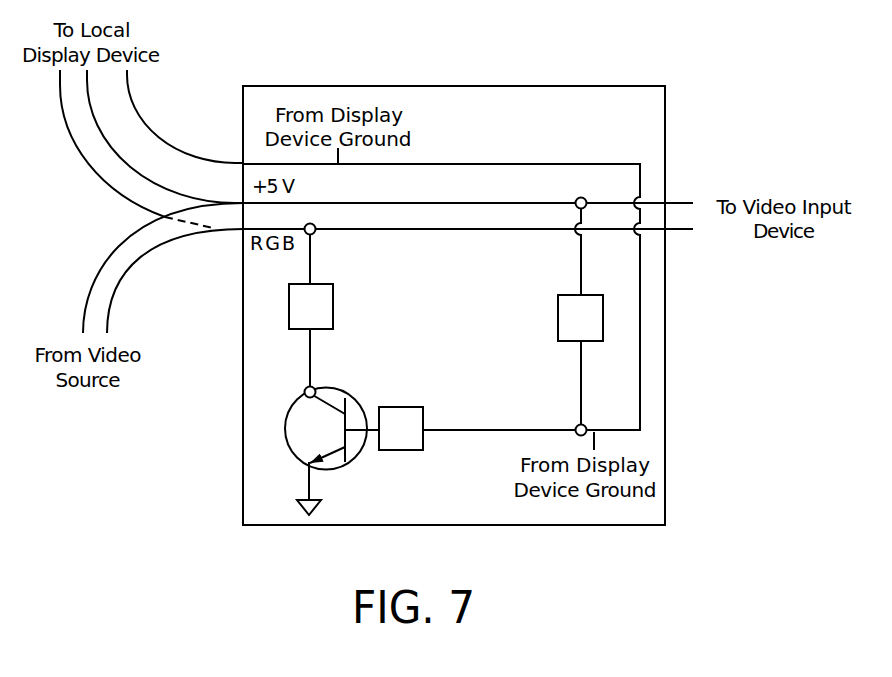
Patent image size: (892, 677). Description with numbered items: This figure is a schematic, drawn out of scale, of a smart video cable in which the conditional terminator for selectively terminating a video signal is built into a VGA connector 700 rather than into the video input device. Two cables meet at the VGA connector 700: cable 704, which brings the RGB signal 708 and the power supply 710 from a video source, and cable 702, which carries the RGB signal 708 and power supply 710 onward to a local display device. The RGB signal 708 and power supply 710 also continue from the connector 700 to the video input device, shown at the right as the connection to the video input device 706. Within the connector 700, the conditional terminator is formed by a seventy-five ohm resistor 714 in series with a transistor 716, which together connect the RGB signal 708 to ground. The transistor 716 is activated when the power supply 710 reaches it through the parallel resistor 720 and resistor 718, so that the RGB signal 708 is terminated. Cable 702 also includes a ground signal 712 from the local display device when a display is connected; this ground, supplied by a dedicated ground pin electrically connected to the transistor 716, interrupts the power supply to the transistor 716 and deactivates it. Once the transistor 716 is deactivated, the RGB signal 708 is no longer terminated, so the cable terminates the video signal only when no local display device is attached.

The VGA connector 700 is at (527, 98).
The cable 702 is at (71, 142).
The cable 704 is at (84, 278).
The connection to video input device 706 is at (680, 199).
The RGB signal 708 is at (100, 176).
The power supply 710 is at (126, 161).
The ground signal 712 is at (150, 128).
The 75-Ohm resistor 714 is at (332, 300).
The transistor 716 is at (337, 397).
The resistor 718 is at (415, 442).
The resistor 720 is at (570, 332).